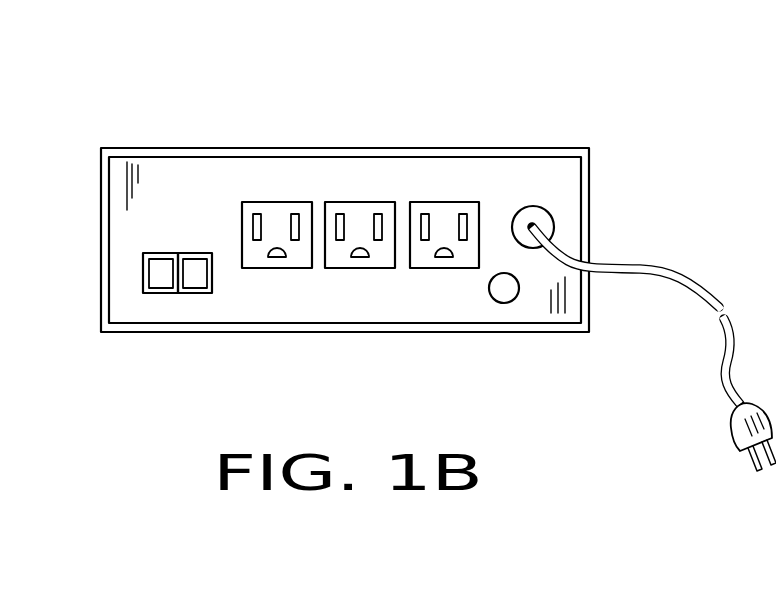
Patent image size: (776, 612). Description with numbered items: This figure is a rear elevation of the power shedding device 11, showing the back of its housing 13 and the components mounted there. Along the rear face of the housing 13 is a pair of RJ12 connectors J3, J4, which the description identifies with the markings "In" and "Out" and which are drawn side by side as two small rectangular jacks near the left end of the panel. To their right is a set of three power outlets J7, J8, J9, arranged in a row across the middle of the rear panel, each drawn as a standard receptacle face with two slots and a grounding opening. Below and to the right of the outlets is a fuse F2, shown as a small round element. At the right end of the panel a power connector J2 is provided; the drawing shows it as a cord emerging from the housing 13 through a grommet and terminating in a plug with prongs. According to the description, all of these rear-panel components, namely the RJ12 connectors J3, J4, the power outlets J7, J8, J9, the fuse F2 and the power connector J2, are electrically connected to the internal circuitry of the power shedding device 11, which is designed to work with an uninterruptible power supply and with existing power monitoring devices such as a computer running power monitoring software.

The power shedding device 11 is at (297, 108).
The housing 13 is at (497, 148).
The power outlet J7 is at (265, 202).
The power outlet J8 is at (345, 202).
The power outlet J9 is at (430, 202).
The RJ12 connector J4 is at (143, 278).
The RJ12 connector J3 is at (212, 283).
The fuse F2 is at (489, 291).
The power connector J2 is at (733, 423).